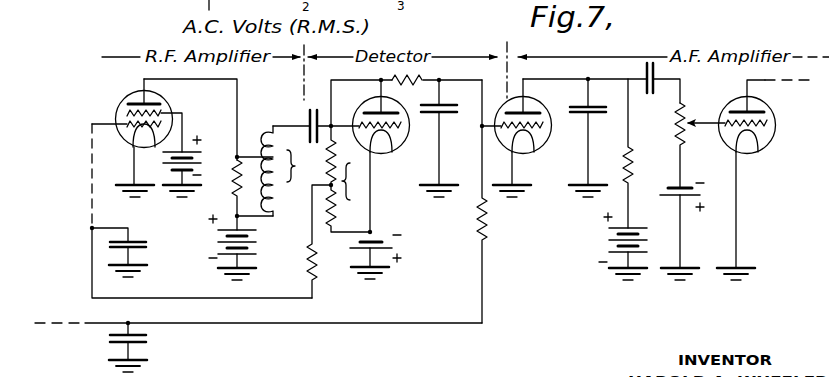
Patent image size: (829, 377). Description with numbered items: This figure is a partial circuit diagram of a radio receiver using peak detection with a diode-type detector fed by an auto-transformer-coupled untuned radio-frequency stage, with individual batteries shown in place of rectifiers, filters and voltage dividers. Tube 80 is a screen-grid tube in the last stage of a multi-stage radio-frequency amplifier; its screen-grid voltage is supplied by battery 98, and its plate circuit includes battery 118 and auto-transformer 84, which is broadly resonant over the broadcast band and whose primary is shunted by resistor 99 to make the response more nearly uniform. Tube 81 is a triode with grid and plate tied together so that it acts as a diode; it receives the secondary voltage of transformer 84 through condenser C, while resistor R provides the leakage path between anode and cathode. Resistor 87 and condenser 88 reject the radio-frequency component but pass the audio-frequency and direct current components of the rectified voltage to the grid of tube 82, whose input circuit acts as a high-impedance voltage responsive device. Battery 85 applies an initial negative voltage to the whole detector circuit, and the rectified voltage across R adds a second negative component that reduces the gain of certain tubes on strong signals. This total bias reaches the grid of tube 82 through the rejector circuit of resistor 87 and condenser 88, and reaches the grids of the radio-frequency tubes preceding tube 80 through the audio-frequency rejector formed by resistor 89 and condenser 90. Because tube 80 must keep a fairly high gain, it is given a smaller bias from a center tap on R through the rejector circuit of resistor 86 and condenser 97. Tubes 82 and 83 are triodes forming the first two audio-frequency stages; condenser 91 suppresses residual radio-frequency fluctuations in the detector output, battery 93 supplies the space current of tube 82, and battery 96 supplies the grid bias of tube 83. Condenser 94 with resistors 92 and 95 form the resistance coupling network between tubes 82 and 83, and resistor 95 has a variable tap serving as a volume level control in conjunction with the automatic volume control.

The screen-grid tube 80 is at (121, 97).
The triode rectifier 81 is at (396, 165).
The first audio-frequency triode 82 is at (543, 146).
The second audio-frequency triode 83 is at (769, 144).
The auto-transformer 84 is at (289, 171).
The battery 85 is at (398, 251).
The resistor 86 is at (303, 259).
The resistor 87 is at (405, 82).
The condenser 88 is at (444, 137).
The resistor 89 is at (489, 220).
The condenser 90 is at (148, 343).
The condenser 91 is at (580, 105).
The resistor 92 is at (623, 160).
The battery 93 is at (604, 242).
The condenser 94 is at (644, 94).
The resistor 95 is at (684, 126).
The battery 96 is at (670, 186).
The condenser 97 is at (148, 246).
The battery 98 is at (171, 166).
The resistor 99 is at (232, 191).
The battery 118 is at (221, 250).
The condenser C is at (322, 98).
The resistor R is at (348, 179).